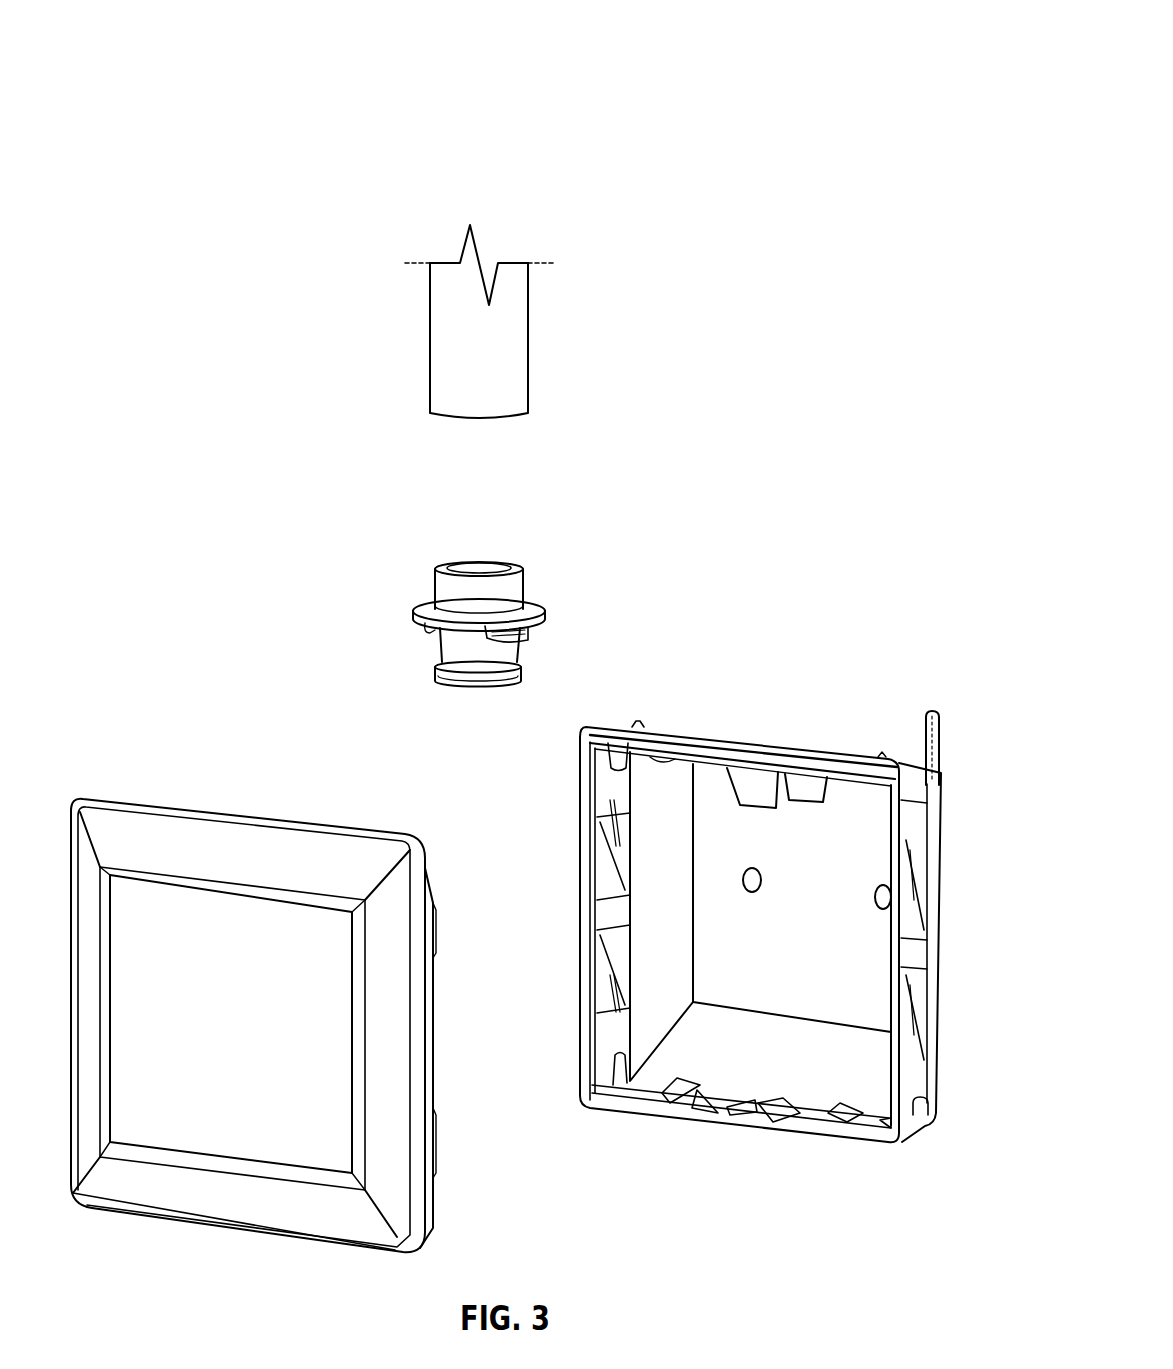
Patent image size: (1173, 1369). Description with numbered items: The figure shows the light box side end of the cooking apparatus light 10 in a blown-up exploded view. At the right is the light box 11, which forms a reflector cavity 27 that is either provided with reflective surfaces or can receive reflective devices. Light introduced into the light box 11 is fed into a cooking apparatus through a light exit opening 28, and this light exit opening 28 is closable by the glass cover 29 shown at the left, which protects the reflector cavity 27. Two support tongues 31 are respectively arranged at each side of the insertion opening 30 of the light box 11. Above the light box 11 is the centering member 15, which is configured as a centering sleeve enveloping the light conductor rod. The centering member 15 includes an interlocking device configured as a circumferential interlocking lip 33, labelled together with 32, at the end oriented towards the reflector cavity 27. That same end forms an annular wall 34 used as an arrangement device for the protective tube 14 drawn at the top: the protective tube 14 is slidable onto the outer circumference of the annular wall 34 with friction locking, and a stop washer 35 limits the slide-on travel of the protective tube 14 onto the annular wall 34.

The cooking apparatus light 10 is at (758, 130).
The light box 11 is at (877, 724).
The protective tube 14 is at (548, 335).
The centering member 15 is at (353, 620).
The reflector cavity 27 is at (779, 1041).
The light exit opening 28 is at (648, 1020).
The glass cover 29 is at (239, 1037).
The insertion opening 30 is at (803, 740).
The support tongues 31 is at (777, 834).
The threaded end 32 is at (614, 584).
The circumferential interlocking lip 33 is at (528, 670).
The annular wall 34 is at (457, 589).
The stop washer 35 is at (548, 606).